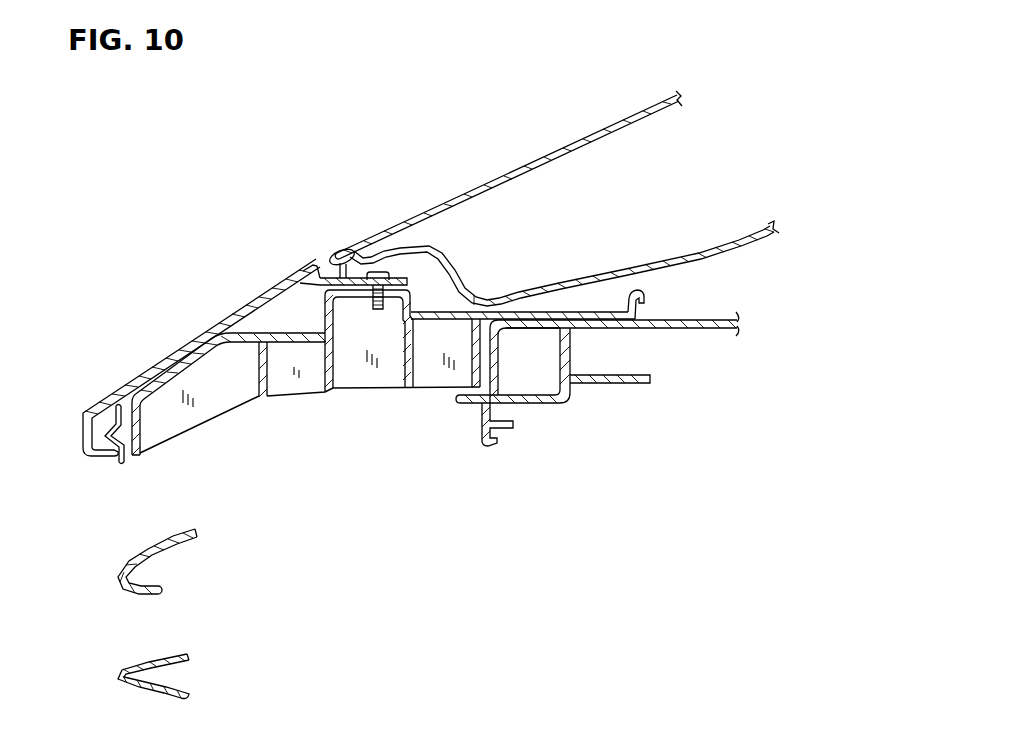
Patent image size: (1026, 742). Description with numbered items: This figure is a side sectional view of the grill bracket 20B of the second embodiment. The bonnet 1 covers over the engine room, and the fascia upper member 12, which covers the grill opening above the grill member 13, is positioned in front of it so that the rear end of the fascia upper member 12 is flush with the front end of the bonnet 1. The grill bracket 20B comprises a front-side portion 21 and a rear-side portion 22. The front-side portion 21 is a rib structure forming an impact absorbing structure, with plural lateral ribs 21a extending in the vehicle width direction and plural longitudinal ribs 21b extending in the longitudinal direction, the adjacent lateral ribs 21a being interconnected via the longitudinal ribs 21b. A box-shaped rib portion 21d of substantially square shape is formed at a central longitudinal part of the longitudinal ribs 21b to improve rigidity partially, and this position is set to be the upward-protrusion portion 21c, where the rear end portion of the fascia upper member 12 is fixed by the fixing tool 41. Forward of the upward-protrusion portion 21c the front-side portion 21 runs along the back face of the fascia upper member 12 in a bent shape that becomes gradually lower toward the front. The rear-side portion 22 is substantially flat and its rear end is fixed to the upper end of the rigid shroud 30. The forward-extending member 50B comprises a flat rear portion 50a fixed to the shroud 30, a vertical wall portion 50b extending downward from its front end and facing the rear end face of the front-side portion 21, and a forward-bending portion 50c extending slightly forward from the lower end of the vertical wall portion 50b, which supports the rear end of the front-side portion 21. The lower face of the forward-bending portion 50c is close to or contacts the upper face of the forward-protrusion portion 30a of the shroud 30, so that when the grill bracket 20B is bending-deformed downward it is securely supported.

The bonnet 1 is at (539, 160).
The fascia upper member 12 is at (201, 328).
The grill member 13 is at (108, 590).
The grill bracket 20B is at (564, 257).
The rear-side portion 22 is at (559, 296).
The front-side portion 21 is at (296, 326).
The lateral ribs 21a is at (141, 434).
The longitudinal ribs 21b is at (291, 355).
The upward-protrusion portion 21c is at (345, 272).
The box-shaped rib portion 21d is at (403, 394).
The fixing tool 41 is at (379, 276).
The shroud 30 is at (683, 336).
The forward-protrusion portion 30a is at (500, 405).
The forward-extending member 50B is at (567, 420).
The rear portion 50a is at (530, 420).
The vertical wall portion 50b is at (533, 401).
The forward-bending portion 50c is at (462, 404).